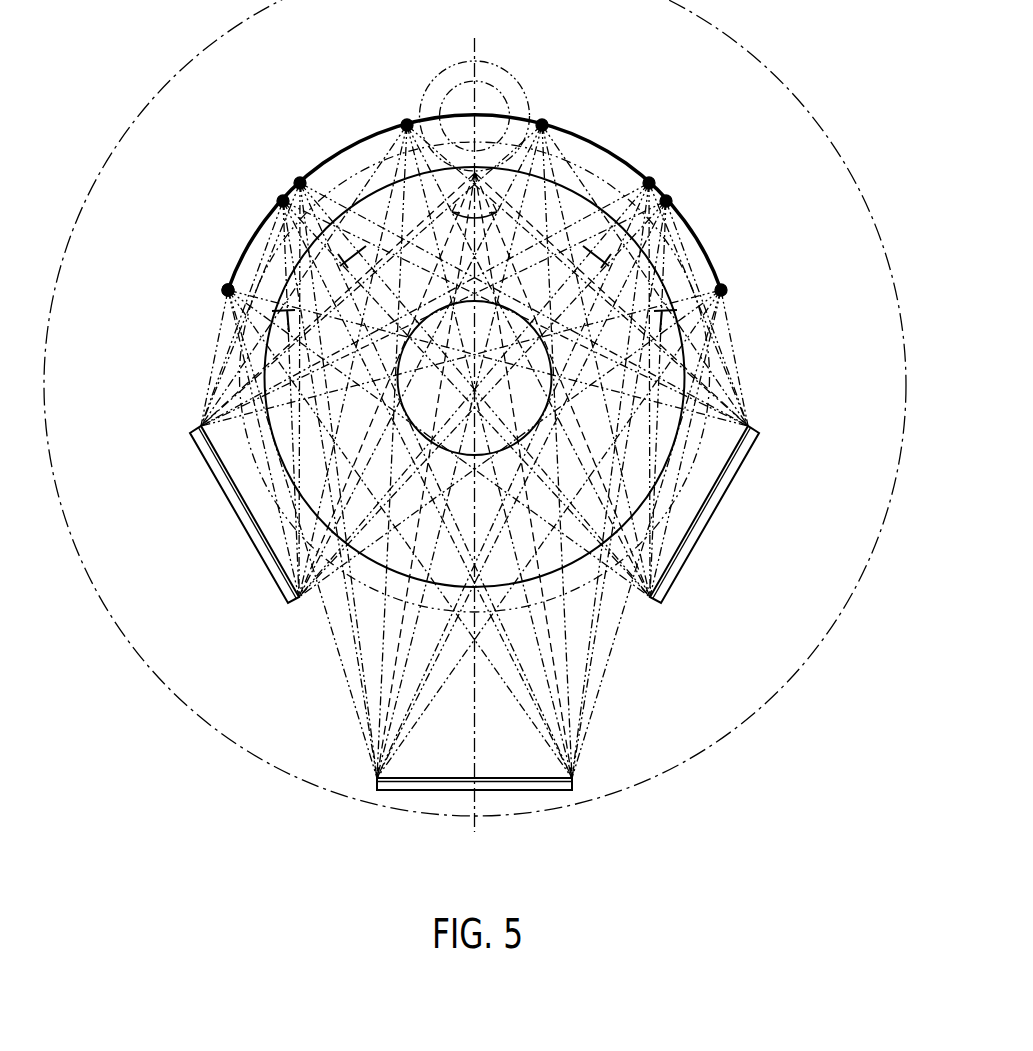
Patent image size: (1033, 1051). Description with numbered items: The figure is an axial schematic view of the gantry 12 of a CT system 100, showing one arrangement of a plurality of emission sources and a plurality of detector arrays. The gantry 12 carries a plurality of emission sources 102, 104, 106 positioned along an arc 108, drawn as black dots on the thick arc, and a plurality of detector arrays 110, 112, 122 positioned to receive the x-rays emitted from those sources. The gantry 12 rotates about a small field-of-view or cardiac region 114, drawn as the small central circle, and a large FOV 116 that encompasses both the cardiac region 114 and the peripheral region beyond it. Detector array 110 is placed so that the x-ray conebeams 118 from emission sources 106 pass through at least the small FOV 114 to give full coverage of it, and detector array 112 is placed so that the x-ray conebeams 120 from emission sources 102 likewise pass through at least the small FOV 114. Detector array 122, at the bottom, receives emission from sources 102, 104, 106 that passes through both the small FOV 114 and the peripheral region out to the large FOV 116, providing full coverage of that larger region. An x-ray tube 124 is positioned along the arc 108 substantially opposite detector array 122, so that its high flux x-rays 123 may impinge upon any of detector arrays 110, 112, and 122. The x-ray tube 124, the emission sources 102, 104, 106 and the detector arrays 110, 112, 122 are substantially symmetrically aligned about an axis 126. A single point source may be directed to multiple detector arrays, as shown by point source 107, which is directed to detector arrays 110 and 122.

The imaging system 100 is at (102, 105).
The gantry 12 is at (703, 748).
The emission sources 102 is at (668, 200).
The emission sources 104 is at (405, 124).
The emission sources 106 is at (282, 201).
The point source 107 is at (226, 292).
The arc 108 is at (360, 140).
The detector array 110 is at (704, 530).
The detector array 112 is at (190, 433).
The small field-of-view 114 is at (537, 428).
The large FOV 116 is at (684, 368).
The x-ray conebeams 118 is at (352, 256).
The x-ray conebeams 120 is at (596, 256).
The detector array 122 is at (575, 777).
The high flux x-rays 123 is at (452, 215).
The x-ray tube 124 is at (528, 96).
The axis 126 is at (478, 41).